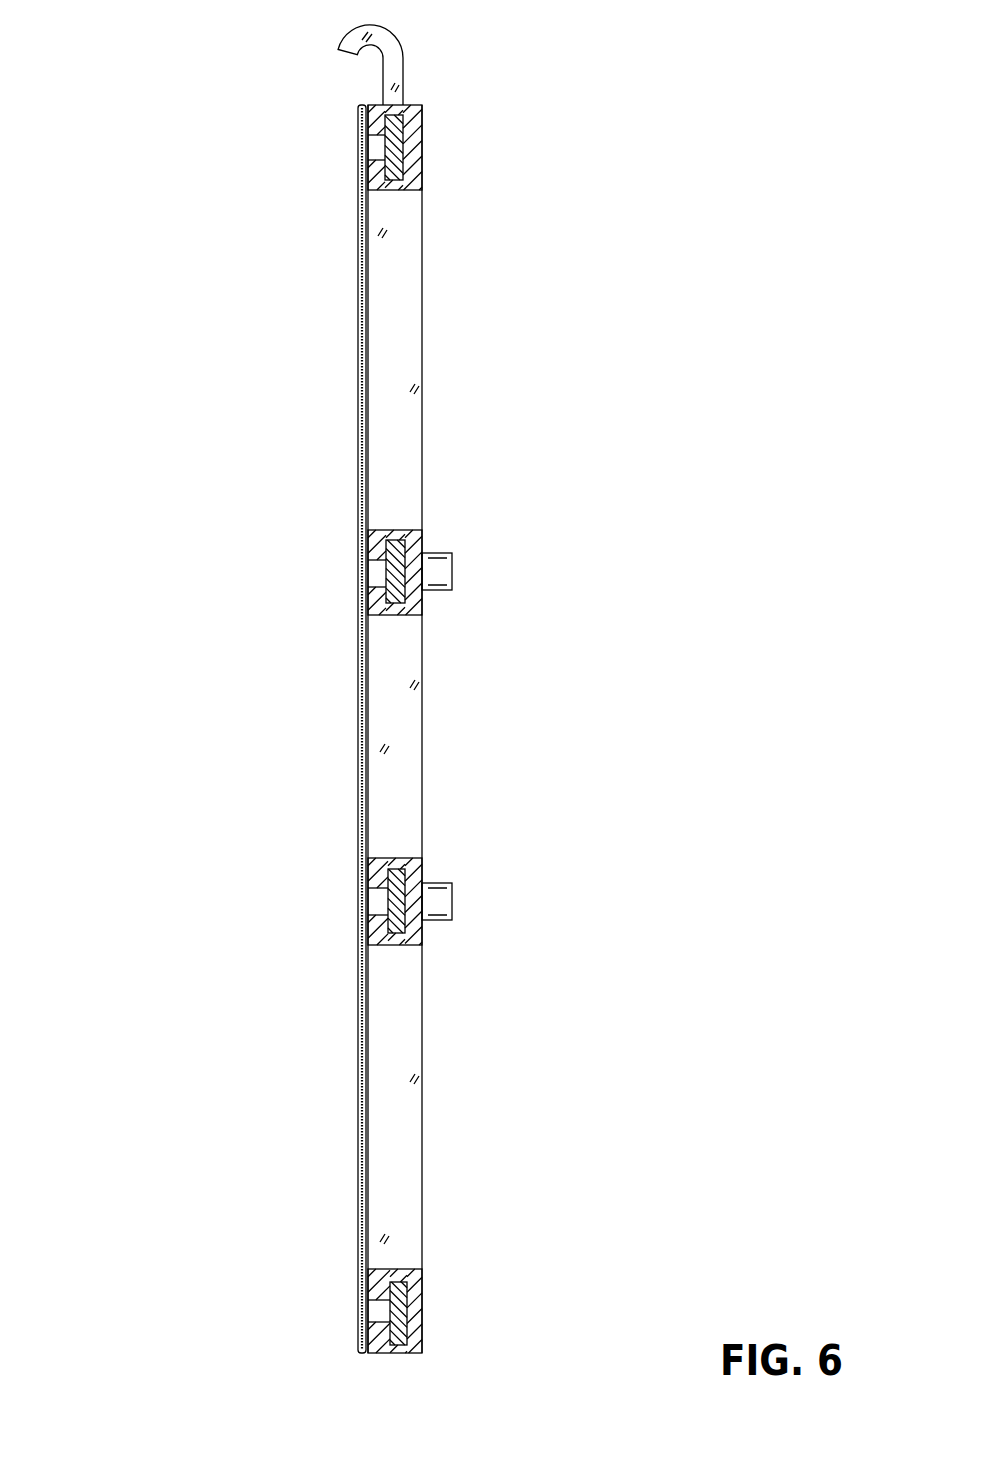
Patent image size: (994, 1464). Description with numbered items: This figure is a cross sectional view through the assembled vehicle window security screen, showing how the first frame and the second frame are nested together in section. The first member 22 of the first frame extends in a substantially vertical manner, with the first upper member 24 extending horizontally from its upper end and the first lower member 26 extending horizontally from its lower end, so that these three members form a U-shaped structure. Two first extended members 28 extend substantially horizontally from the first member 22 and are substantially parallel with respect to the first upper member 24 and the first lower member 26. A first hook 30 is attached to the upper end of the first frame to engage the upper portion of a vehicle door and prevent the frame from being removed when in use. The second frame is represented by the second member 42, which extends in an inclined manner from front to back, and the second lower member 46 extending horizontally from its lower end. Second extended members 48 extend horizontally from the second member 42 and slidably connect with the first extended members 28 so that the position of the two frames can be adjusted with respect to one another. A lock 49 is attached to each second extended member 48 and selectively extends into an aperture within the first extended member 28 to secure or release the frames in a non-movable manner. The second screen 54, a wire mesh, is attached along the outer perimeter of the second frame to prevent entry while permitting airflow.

The first member 22 is at (403, 450).
The first upper member 24 is at (400, 152).
The first lower member 26 is at (407, 1313).
The first extended member 28 is at (388, 572).
The first hook 30 is at (403, 54).
The second member 42 is at (422, 122).
The second lower member 46 is at (422, 1270).
The second extended member 48 is at (368, 533).
The lock 49 is at (452, 570).
The second screen 54 is at (358, 337).